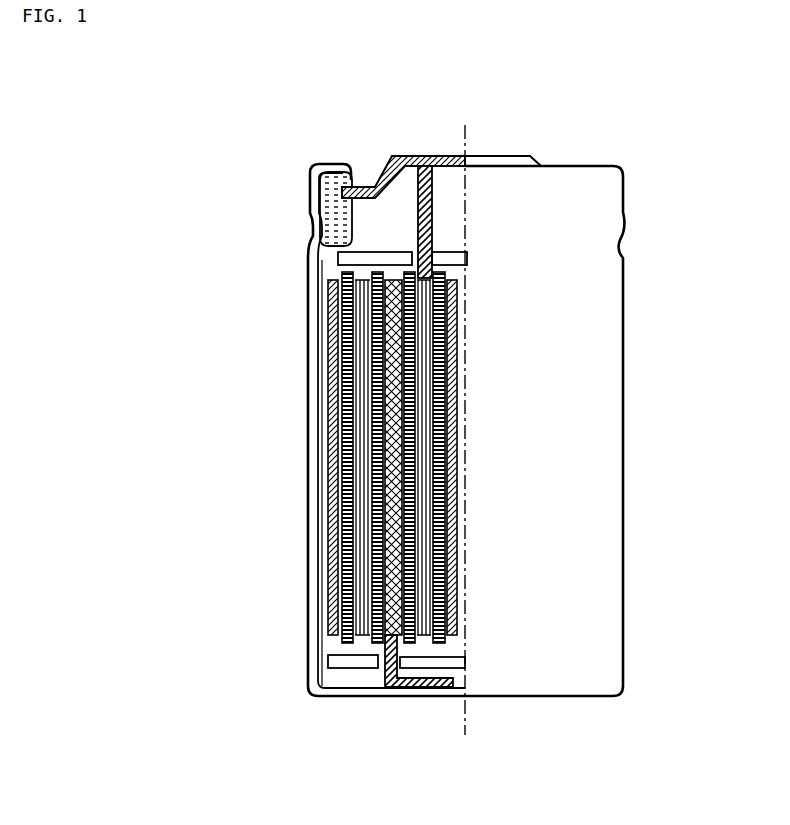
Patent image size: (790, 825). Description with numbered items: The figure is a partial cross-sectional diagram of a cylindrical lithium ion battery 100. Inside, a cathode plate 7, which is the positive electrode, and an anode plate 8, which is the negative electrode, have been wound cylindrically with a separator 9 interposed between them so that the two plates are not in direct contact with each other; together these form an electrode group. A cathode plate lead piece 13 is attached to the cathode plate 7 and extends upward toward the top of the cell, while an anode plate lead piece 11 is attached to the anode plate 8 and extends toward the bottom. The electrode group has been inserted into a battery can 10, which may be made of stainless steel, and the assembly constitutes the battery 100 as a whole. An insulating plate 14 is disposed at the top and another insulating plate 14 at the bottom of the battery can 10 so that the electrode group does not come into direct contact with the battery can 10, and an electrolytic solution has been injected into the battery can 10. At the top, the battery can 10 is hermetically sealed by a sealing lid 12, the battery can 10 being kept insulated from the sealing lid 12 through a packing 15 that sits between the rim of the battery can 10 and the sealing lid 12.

The battery 100 is at (585, 139).
The cathode plate 7 is at (424, 645).
The anode plate 8 is at (330, 568).
The separator 9 is at (380, 639).
The battery can 10 is at (308, 474).
The anode plate lead piece 11 is at (398, 688).
The sealing lid 12 is at (512, 156).
The cathode plate lead piece 13 is at (418, 222).
The insulating plate 14 is at (338, 256).
The packing 15 is at (350, 170).